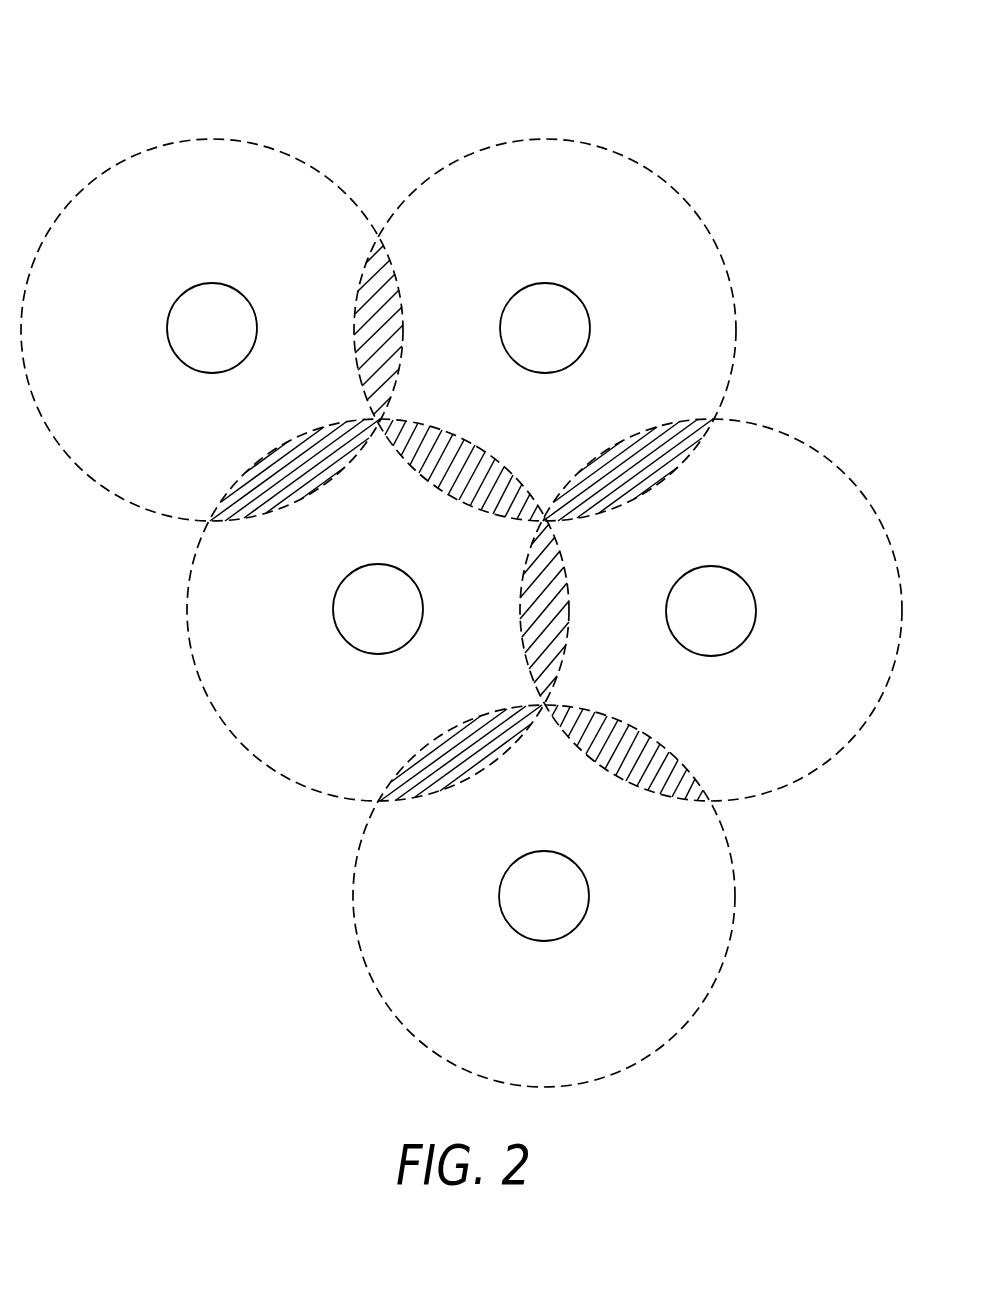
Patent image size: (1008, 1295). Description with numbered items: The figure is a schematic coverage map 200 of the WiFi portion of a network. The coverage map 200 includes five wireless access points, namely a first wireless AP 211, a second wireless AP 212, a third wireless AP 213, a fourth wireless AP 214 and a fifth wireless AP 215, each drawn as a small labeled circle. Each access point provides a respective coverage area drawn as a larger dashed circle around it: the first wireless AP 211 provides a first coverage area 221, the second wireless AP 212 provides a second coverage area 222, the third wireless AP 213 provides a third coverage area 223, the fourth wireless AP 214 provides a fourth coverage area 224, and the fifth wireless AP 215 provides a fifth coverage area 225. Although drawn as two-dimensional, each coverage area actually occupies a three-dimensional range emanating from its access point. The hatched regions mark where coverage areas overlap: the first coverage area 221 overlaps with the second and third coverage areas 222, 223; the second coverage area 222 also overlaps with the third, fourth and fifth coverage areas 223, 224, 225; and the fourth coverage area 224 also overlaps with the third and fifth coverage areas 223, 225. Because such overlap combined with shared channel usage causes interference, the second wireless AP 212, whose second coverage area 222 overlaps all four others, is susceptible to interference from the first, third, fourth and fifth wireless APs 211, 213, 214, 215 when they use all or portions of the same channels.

The coverage map 200 is at (100, 72).
The first wireless AP 211 is at (213, 283).
The second wireless AP 212 is at (378, 564).
The third wireless AP 213 is at (546, 283).
The fourth wireless AP 214 is at (711, 566).
The fifth wireless AP 215 is at (544, 851).
The first coverage area 221 is at (213, 139).
The second coverage area 222 is at (188, 612).
The third coverage area 223 is at (546, 139).
The fourth coverage area 224 is at (803, 448).
The fifth coverage area 225 is at (735, 897).